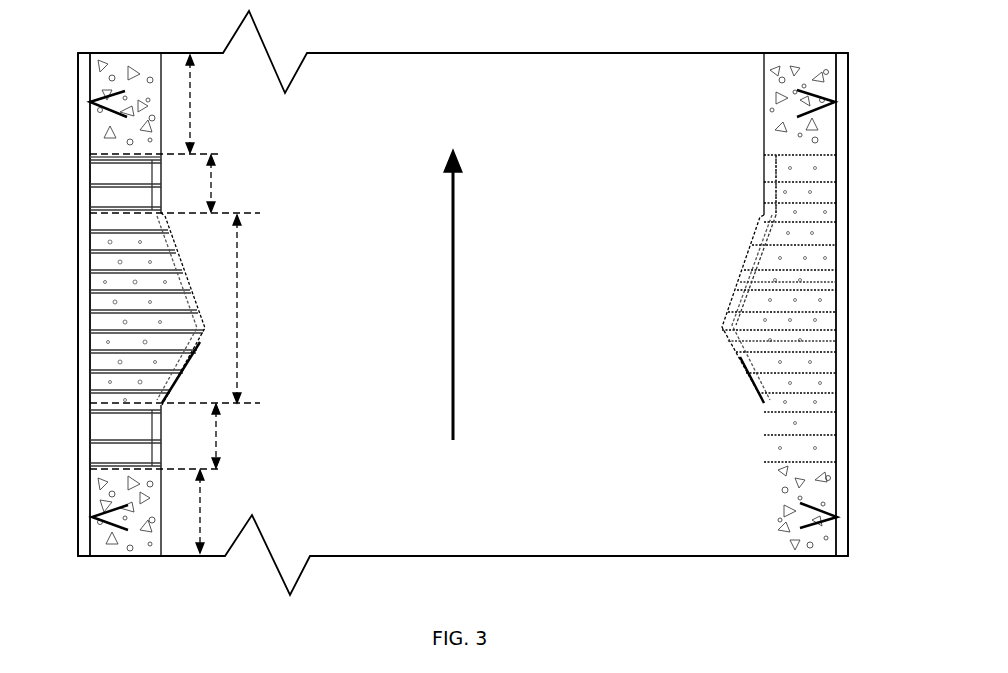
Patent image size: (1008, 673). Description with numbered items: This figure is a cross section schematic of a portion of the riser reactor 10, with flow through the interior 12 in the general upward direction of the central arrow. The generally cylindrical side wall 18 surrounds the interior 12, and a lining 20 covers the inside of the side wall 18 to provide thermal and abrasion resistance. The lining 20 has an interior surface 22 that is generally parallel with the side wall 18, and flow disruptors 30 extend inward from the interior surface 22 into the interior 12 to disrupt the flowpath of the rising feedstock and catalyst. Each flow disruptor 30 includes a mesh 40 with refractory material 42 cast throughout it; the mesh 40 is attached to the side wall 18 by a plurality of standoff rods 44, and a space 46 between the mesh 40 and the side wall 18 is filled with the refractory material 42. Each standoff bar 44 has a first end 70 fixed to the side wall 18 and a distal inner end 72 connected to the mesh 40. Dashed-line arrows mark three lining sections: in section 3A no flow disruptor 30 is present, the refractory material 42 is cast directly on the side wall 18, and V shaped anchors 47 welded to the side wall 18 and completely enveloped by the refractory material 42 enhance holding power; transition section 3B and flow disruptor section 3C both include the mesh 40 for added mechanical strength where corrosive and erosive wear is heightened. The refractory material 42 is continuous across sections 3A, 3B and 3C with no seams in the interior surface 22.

The reactor 10 is at (148, 586).
The interior 12 is at (344, 144).
The side wall 18 is at (80, 322).
The lining 20 is at (208, 350).
The interior surface 22 is at (764, 127).
The flow disruptors 30 is at (750, 275).
The mesh 40 is at (750, 250).
The refractory material 42 is at (800, 66).
The standoff rods 44 is at (835, 240).
The space 46 is at (828, 340).
The V shaped anchors 47 is at (104, 90).
The first end 70 is at (95, 264).
The distal inner end 72 is at (175, 265).
The section 3A is at (198, 108).
The transition section 3B is at (218, 190).
The flow disruptor section 3C is at (240, 308).